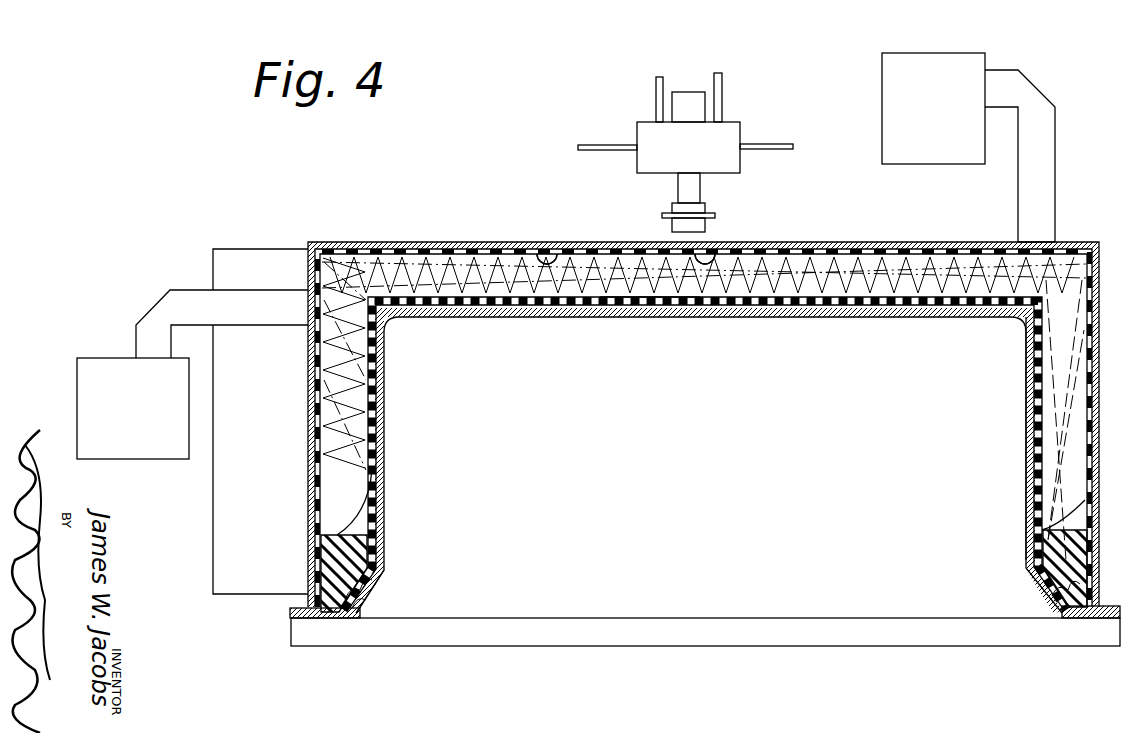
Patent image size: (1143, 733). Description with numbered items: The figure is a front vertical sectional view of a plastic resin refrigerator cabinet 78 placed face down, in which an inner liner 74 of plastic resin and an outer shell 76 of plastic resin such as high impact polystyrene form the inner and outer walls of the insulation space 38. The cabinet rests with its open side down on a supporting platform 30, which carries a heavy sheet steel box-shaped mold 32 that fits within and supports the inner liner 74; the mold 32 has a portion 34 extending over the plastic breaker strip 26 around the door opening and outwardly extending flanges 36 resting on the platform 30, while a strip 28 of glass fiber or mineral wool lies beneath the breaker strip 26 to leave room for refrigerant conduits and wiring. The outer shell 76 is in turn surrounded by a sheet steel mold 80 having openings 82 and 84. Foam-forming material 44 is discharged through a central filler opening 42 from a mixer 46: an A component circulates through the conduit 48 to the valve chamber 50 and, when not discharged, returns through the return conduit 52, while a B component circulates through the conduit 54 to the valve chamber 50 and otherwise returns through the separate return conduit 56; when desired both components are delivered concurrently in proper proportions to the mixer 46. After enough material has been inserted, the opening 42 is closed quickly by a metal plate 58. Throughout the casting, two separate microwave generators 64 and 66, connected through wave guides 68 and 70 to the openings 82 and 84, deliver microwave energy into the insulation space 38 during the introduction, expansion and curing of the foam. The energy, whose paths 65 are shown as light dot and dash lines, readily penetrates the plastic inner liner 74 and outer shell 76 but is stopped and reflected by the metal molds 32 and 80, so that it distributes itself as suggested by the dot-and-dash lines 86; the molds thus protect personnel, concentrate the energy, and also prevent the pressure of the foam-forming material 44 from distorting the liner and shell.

The plastic breaker strip 26 is at (375, 583).
The strip of glass fiber or mineral wool 28 is at (362, 548).
The supporting platform 30 is at (620, 648).
The mold 32 is at (705, 451).
The portion 34 is at (360, 602).
The flanges 36 is at (296, 615).
The insulation space 38 is at (524, 290).
The filler opening 42 is at (725, 247).
The foam-forming material 44 is at (712, 302).
The mixer 46 is at (692, 140).
The conduit 48 is at (656, 83).
The valve chamber 50 is at (727, 130).
The return conduit 52 is at (588, 150).
The conduit 54 is at (722, 80).
The return conduit 56 is at (793, 149).
The metal plate 58 is at (662, 240).
The microwave generator 64 is at (907, 63).
The paths of the microwave energy 65 is at (345, 300).
The microwave generator 66 is at (88, 382).
The wave guide 68 is at (1043, 130).
The wave guide 70 is at (168, 305).
The inner liner 74 is at (665, 305).
The outer shell 76 is at (536, 243).
The plastic resin refrigerator cabinet 78 is at (893, 248).
The sheet steel mold 80 is at (420, 242).
The opening 82 is at (1036, 242).
The opening 84 is at (308, 308).
The dot-and-dash lines 86 is at (870, 290).